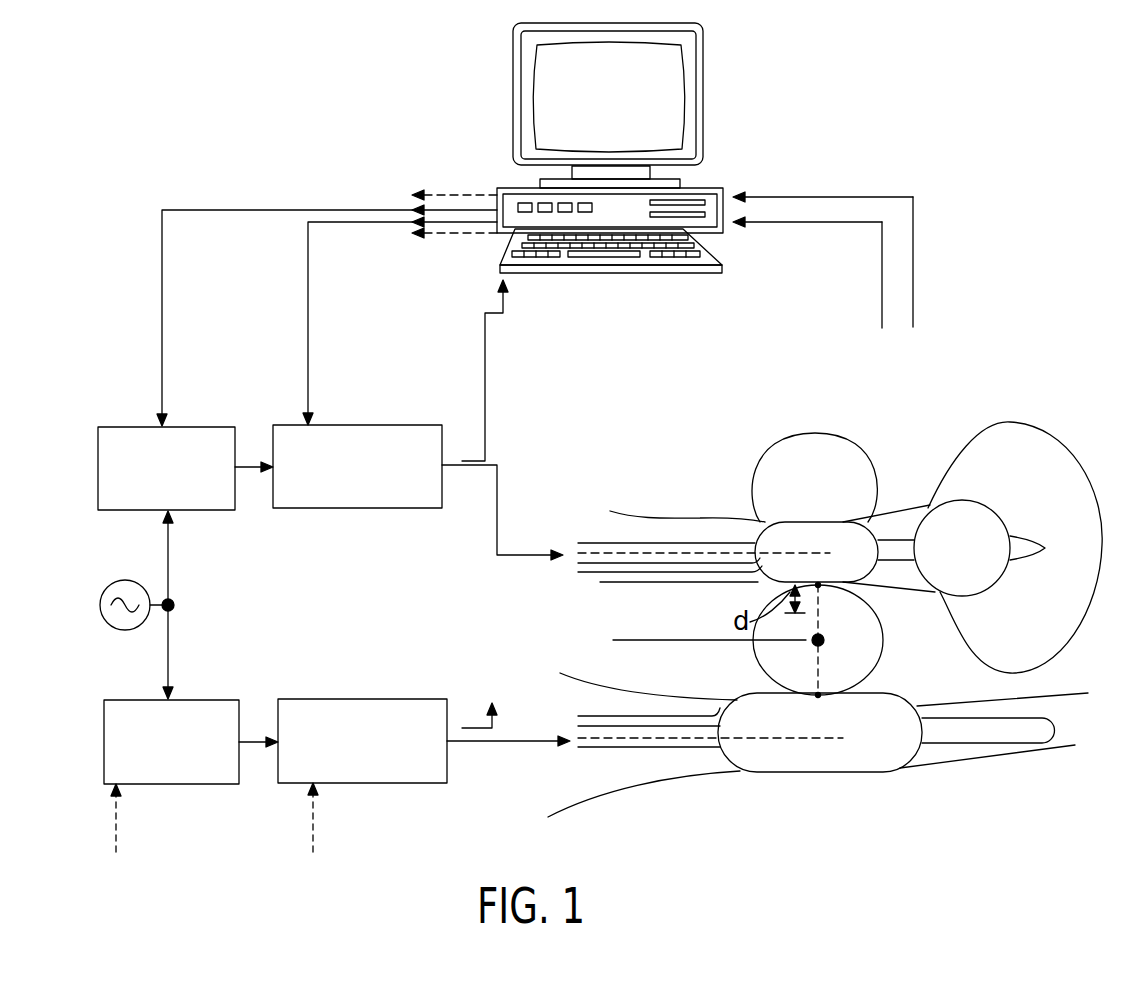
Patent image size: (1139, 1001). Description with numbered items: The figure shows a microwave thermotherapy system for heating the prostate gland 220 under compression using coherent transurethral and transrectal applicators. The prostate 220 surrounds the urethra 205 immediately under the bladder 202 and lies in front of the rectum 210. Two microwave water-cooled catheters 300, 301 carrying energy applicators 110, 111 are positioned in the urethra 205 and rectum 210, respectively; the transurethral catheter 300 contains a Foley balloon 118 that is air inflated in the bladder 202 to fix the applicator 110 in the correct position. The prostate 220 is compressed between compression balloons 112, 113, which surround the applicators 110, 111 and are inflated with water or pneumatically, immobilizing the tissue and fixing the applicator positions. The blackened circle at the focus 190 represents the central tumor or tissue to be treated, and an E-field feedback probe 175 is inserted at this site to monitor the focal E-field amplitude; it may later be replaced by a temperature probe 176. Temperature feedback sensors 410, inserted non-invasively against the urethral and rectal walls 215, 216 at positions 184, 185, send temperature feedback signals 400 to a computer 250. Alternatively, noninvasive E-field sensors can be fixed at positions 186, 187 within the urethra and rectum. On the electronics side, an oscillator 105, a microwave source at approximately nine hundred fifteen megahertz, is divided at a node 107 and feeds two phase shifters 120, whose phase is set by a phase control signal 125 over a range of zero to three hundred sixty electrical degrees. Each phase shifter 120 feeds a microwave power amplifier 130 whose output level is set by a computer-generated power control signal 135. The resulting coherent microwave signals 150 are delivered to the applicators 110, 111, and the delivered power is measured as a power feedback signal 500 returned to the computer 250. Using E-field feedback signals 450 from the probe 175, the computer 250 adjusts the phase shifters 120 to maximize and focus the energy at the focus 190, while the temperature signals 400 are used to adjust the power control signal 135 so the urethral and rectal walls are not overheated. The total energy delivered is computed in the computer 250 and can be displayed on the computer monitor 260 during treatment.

The oscillator 105 is at (122, 630).
The node 107 is at (174, 604).
The transurethral microwave applicator 110 is at (808, 522).
The transrectal microwave applicator 111 is at (822, 752).
The compression balloon 112 is at (767, 526).
The compression balloon 113 is at (918, 706).
The Foley balloon 118 is at (960, 501).
The phase shifter 120 is at (196, 512).
The phase control signal 125 is at (162, 322).
The microwave power amplifier 130 is at (352, 510).
The power control signal 135 is at (308, 338).
The microwave signals 150 is at (507, 560).
The E-field feedback probe 175 is at (806, 641).
The temperature probe 176 is at (760, 641).
The urethral wall temperature monitoring position 184 is at (768, 573).
The rectal wall temperature monitoring position 185 is at (805, 695).
The urethral E-field sensor position 186 is at (830, 549).
The rectal E-field sensor position 187 is at (820, 692).
The focus 190 is at (874, 618).
The bladder 202 is at (1000, 423).
The urethra 205 is at (645, 519).
The rectum 210 is at (655, 768).
The urethral wall 215 is at (683, 584).
The rectal wall 216 is at (1085, 693).
The prostate gland 220 is at (842, 432).
The computer 250 is at (500, 190).
The computer monitor 260 is at (703, 57).
The transurethral catheter 300 is at (600, 543).
The transrectal catheter 301 is at (600, 748).
The temperature feedback signals 400 is at (882, 325).
The temperature feedback sensors 410 is at (590, 574).
The E-field feedback signals 450 is at (902, 195).
The power feedback signal 500 is at (485, 335).